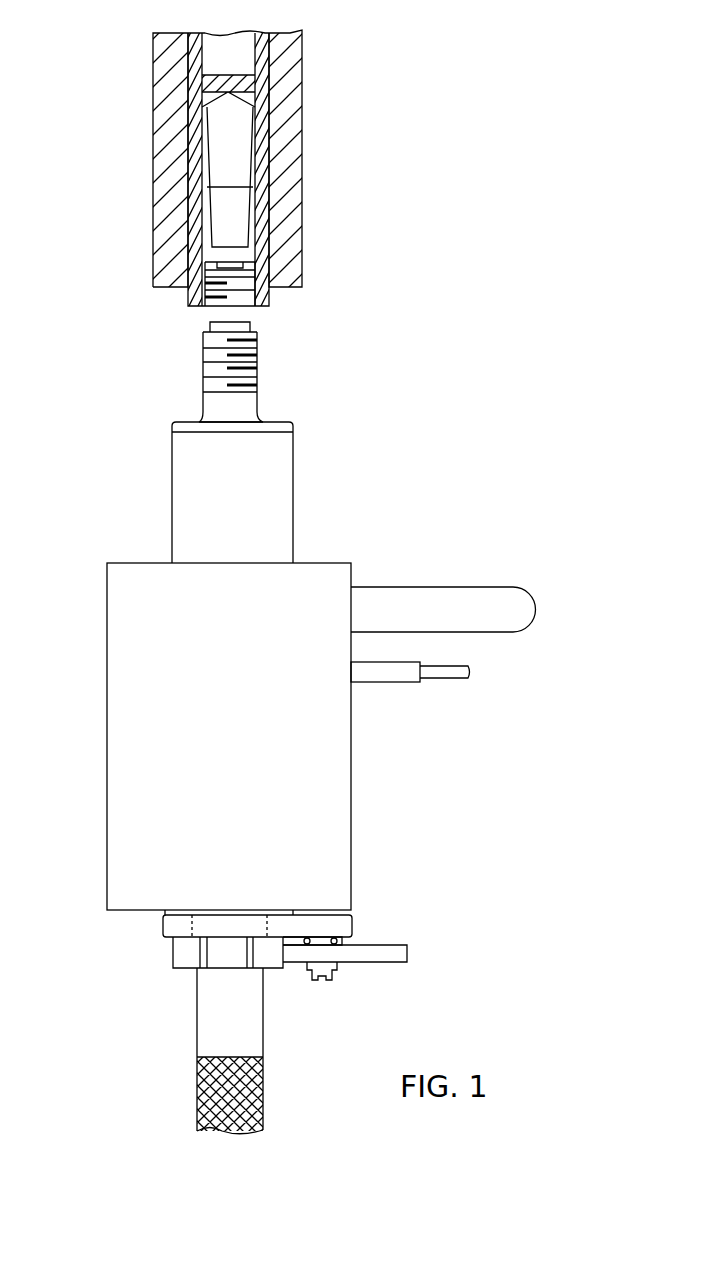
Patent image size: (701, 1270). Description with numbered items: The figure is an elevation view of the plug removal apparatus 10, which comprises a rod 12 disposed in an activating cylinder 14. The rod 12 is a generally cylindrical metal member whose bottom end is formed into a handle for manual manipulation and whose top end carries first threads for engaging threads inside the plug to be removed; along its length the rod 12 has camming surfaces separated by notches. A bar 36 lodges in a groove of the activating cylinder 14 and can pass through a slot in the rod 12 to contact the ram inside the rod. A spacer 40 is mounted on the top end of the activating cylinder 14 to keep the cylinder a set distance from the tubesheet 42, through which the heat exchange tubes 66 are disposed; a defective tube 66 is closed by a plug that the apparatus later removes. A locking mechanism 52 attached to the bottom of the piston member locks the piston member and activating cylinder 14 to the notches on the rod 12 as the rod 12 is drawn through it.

The plug removal apparatus 10 is at (321, 582).
The rod 12 is at (250, 1008).
The activating cylinder 14 is at (240, 723).
The bar 36 is at (420, 597).
The spacer 40 is at (243, 515).
The tubesheet 42 is at (288, 211).
The locking mechanism 52 is at (372, 930).
The heat exchange tube 66 is at (190, 198).